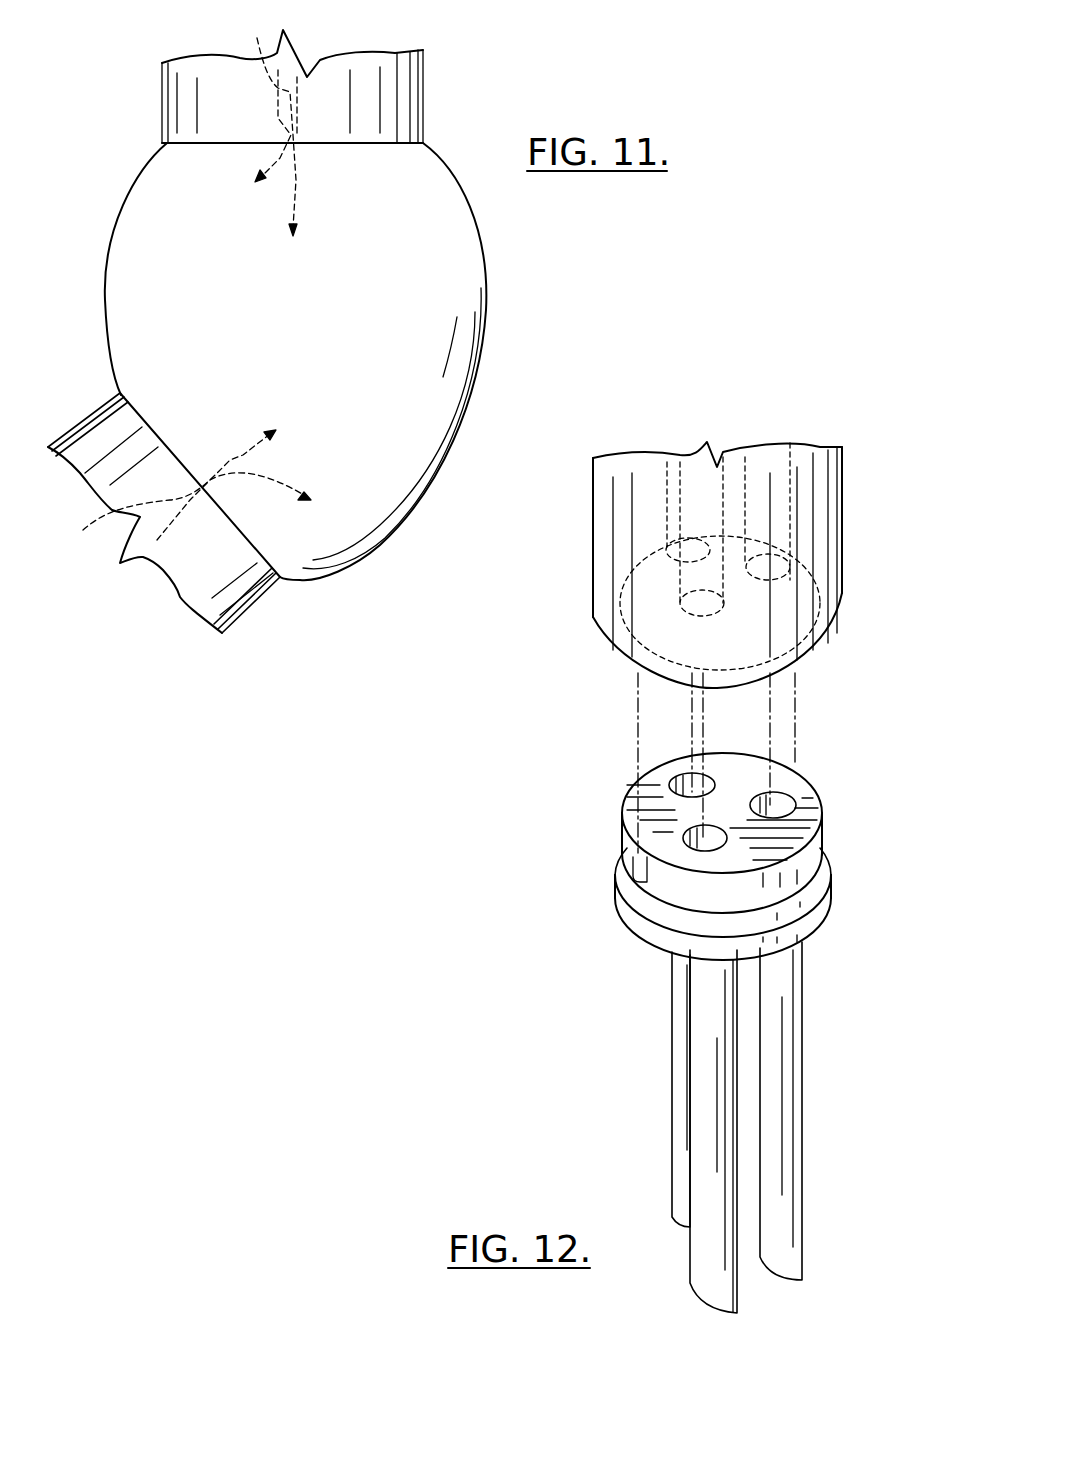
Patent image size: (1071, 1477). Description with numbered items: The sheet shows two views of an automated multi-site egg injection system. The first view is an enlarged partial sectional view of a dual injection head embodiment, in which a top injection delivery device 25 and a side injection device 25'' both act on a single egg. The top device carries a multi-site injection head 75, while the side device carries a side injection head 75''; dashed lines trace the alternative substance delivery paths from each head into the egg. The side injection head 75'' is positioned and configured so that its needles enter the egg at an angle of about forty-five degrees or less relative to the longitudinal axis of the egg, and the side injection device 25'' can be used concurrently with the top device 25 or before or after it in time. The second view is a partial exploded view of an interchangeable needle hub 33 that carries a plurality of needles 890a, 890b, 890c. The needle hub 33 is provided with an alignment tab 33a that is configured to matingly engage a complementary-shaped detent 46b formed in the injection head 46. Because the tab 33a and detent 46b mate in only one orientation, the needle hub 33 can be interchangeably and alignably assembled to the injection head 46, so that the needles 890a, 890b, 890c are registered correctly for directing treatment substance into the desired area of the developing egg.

In FIG. 11, the injection delivery device 25 is at (321, 86).
In FIG. 11, the multi-site injection delivery device 75 is at (266, 124).
In FIG. 11, the side injection device 25'' is at (164, 513).
In FIG. 11, the side injection head 75'' is at (180, 496).
In FIG. 12, the injection head 46 is at (842, 553).
In FIG. 12, the detent 46b is at (630, 657).
In FIG. 12, the needle hub 33 is at (805, 858).
In FIG. 12, the alignment tab 33a is at (642, 867).
In FIG. 12, the needle 890a is at (783, 1142).
In FIG. 12, the needle 890b is at (725, 1288).
In FIG. 12, the needle 890c is at (680, 1157).